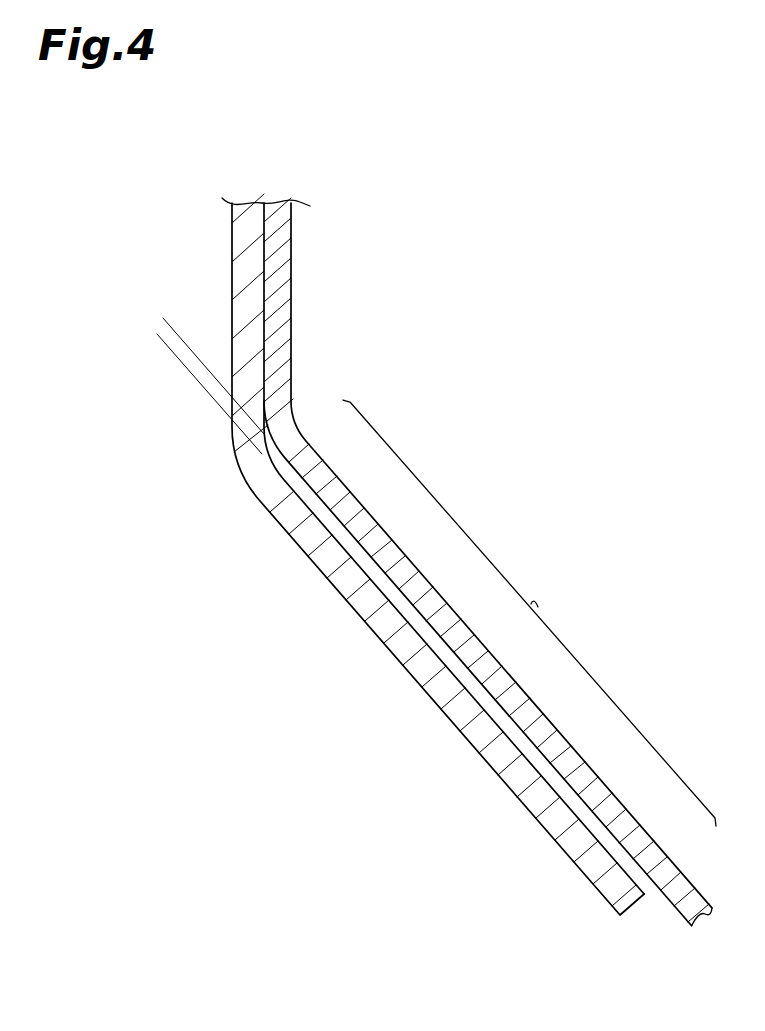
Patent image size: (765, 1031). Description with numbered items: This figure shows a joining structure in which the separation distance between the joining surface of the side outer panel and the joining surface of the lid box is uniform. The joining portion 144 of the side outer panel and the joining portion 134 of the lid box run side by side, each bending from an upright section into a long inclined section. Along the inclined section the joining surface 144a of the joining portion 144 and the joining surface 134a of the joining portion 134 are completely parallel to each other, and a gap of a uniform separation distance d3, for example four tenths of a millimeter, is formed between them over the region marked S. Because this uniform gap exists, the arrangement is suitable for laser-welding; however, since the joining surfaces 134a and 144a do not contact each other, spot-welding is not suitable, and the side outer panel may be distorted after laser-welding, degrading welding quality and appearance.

The joining portion of the lid box 134 is at (400, 546).
The joining surface of the joining portion of the lid box 134a is at (472, 683).
The joining portion of the side outer panel 144 is at (430, 697).
The joining surface of the joining portion of the side outer panel 144a is at (484, 706).
The separation distance d3 is at (202, 308).
The separated region S is at (529, 613).